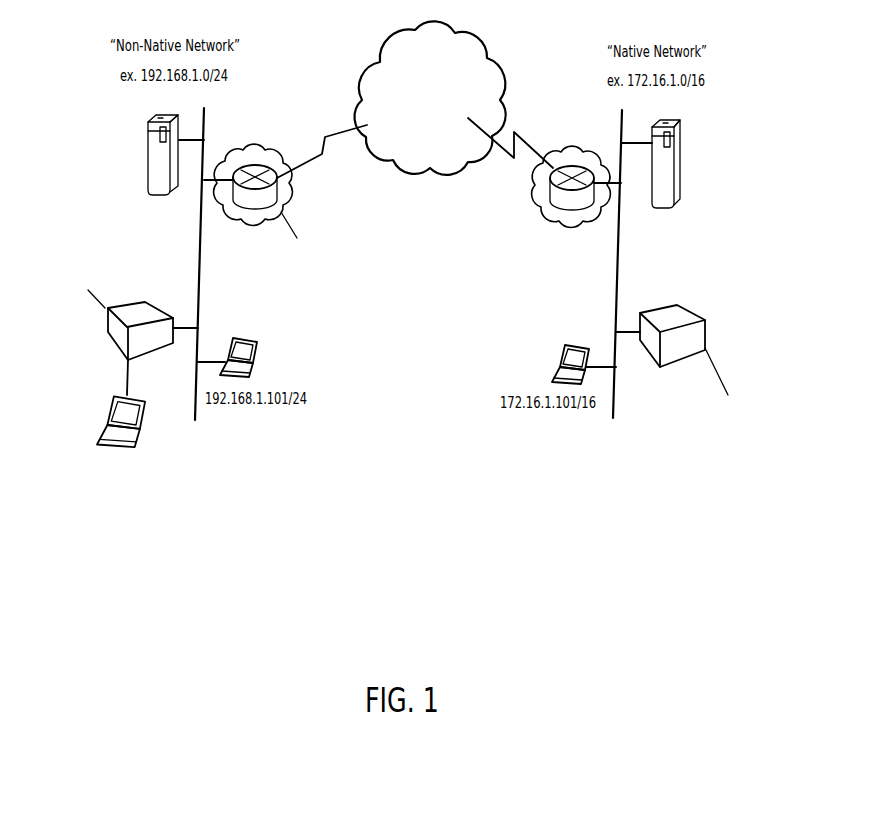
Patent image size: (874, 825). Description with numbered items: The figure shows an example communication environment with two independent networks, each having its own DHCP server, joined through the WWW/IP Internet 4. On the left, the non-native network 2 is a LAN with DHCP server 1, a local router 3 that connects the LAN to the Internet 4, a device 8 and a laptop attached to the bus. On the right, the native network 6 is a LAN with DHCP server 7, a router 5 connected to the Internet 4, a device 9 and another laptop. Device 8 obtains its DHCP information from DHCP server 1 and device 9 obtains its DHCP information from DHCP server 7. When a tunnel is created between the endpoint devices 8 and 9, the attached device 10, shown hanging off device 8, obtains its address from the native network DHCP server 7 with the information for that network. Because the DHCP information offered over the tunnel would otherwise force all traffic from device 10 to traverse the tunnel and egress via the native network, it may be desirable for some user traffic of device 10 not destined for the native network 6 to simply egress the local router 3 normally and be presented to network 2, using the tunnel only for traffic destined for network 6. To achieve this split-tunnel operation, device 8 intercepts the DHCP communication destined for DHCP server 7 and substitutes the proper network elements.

The DHCP server 1 is at (120, 148).
The network 2 is at (204, 280).
The local router 3 is at (284, 202).
The WWW/IP Internet 4 is at (430, 98).
The router 5 is at (544, 200).
The network 6 is at (610, 285).
The DHCP server 7 is at (708, 158).
The device 8 is at (118, 317).
The device 9 is at (688, 352).
The device 10 is at (117, 416).